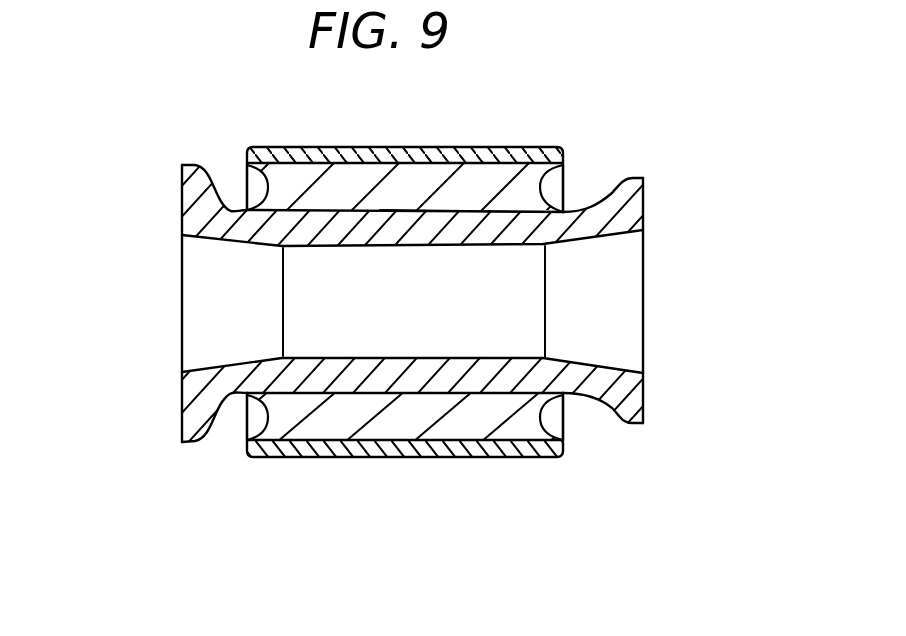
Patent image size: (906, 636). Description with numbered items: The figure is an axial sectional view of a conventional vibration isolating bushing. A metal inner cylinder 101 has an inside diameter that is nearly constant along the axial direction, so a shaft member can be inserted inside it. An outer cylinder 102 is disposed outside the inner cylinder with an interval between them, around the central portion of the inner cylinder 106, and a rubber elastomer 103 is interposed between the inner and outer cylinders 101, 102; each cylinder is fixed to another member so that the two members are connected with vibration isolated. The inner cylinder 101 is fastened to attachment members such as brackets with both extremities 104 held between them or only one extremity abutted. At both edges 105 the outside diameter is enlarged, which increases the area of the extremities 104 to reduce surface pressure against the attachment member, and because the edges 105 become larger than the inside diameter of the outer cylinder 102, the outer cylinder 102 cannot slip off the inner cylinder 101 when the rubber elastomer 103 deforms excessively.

The inner cylinder 101 is at (335, 393).
The outer cylinder 102 is at (328, 147).
The rubber elastomer 103 is at (450, 425).
The extremities 104 is at (182, 200).
The edges 105 is at (195, 411).
The central portion of the inner cylinder 106 is at (437, 222).